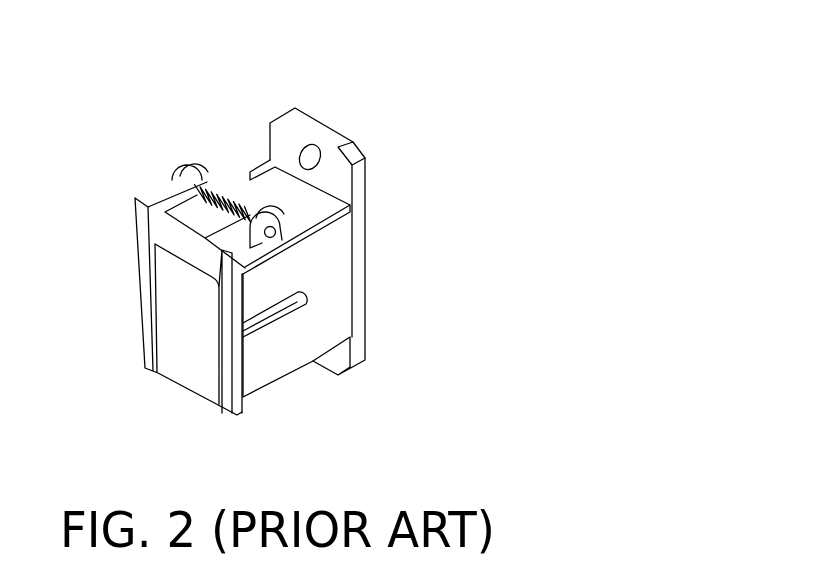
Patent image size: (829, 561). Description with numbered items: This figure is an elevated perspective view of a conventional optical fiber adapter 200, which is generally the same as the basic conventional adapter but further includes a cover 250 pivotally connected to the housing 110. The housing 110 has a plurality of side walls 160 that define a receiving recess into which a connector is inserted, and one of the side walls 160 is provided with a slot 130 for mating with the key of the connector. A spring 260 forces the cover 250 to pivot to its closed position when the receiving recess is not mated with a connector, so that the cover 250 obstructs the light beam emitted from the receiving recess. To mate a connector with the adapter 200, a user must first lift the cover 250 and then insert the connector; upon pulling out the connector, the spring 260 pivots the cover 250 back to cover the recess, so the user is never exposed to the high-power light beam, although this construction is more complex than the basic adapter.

The fiber adapter 200 is at (404, 67).
The housing 110 is at (248, 151).
The spring 260 is at (232, 198).
The cover 250 is at (175, 335).
The side walls 160 is at (262, 368).
The slot 130 is at (280, 308).